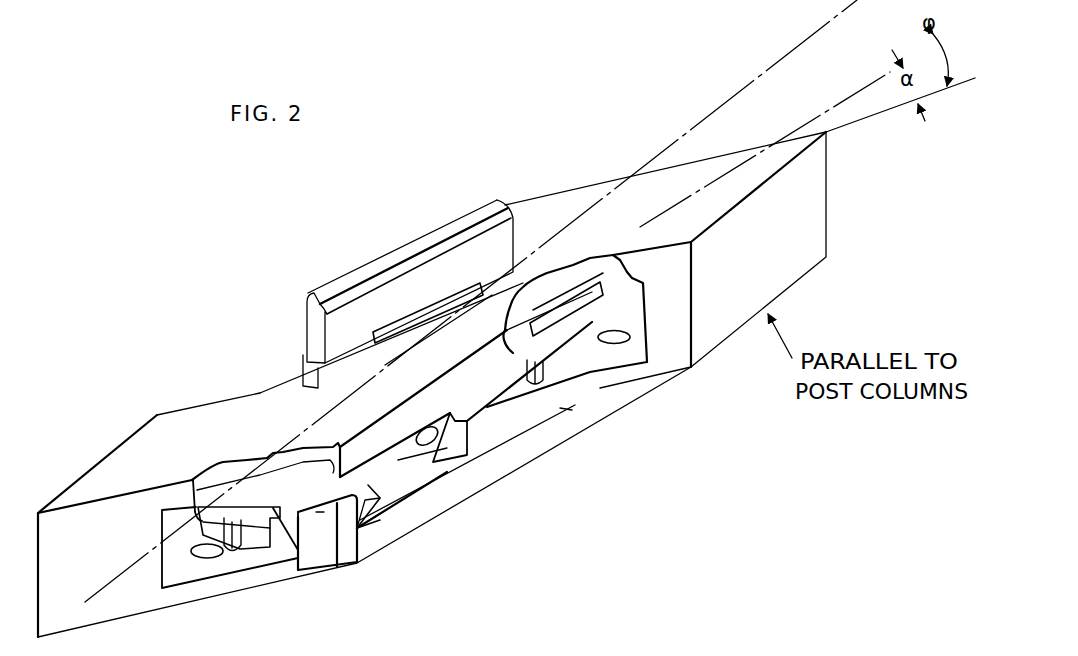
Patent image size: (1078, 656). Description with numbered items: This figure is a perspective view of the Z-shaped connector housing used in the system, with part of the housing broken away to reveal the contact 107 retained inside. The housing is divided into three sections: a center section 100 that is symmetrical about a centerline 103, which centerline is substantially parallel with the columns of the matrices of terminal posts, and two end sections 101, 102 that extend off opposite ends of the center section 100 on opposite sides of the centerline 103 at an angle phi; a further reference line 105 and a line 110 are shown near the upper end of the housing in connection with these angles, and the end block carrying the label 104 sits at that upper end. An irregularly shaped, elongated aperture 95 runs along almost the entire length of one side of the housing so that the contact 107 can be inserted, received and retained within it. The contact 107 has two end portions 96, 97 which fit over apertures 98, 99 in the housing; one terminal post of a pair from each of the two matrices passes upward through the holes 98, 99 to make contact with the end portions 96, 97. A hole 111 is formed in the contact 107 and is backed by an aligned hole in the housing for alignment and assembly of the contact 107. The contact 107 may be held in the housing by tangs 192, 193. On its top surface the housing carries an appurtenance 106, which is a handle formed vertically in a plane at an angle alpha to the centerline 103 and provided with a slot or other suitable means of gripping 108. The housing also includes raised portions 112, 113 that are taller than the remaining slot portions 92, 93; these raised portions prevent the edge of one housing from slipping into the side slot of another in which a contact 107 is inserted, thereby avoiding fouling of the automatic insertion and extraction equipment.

The slot portion 92 is at (320, 514).
The slot portion 93 is at (513, 412).
The elongated aperture 95 is at (632, 360).
The end portion 96 is at (645, 292).
The end portion 97 is at (238, 552).
The aperture 98 is at (630, 336).
The aperture 99 is at (207, 556).
The center section 100 is at (421, 394).
The end section 101 is at (686, 202).
The end section 102 is at (210, 450).
The centerline 103 is at (728, 98).
The second end block 104 is at (808, 219).
The reference line 105 is at (852, 130).
The appurtenance 106 is at (522, 203).
The contact 107 is at (398, 460).
The means of gripping 108 is at (322, 373).
The reference line 110 is at (853, 107).
The hole 111 is at (437, 436).
The raised portion 112 is at (572, 410).
The raised portion 113 is at (306, 517).
The tang 192 is at (440, 457).
The tang 193 is at (370, 490).